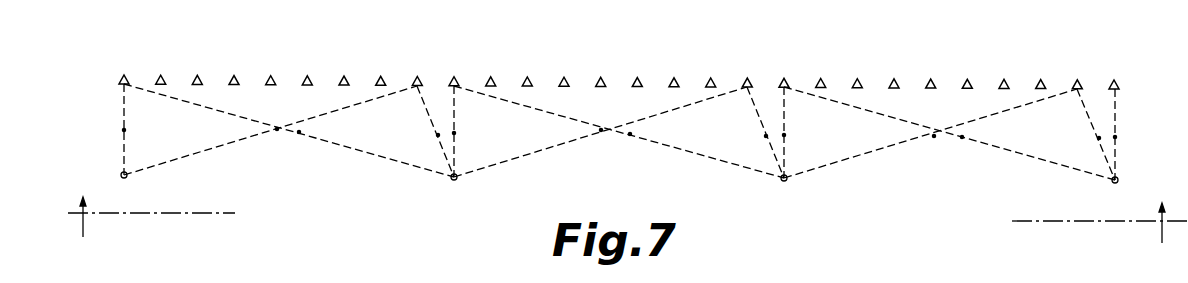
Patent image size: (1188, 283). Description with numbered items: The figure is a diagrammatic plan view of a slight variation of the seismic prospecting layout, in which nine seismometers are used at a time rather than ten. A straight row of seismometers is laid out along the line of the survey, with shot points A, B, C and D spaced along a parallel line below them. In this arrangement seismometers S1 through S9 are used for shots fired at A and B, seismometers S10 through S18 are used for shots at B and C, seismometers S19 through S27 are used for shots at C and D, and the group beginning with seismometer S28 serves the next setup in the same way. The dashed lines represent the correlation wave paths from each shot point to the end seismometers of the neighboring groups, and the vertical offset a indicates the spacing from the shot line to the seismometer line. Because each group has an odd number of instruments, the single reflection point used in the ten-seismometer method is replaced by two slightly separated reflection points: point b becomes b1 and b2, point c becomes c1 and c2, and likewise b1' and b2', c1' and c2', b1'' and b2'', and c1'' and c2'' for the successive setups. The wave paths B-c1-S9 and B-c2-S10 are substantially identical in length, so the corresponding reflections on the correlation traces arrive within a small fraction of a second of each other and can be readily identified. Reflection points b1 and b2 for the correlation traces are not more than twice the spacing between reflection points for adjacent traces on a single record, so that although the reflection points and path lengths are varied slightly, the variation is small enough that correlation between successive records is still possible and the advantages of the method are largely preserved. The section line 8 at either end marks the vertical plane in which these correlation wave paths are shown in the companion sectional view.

The seismometer S1 is at (124, 75).
The seismometer S9 is at (419, 76).
The seismometer S10 is at (456, 76).
The seismometer S18 is at (749, 78).
The seismometer S19 is at (786, 78).
The seismometer S27 is at (1080, 79).
The seismometer S28 is at (1117, 79).
The reflection point a is at (120, 130).
The reflection point b1 is at (264, 145).
The reflection point b2 is at (310, 147).
The reflection point c1 is at (424, 134).
The reflection point c2 is at (474, 131).
The reflection point b1' is at (591, 146).
The reflection point b2' is at (642, 148).
The reflection point c1' is at (750, 135).
The reflection point c2' is at (807, 132).
The reflection point b1'' is at (922, 151).
The reflection point b2'' is at (972, 151).
The reflection point c1'' is at (1078, 137).
The reflection point c2'' is at (1140, 134).
The shot point A is at (126, 178).
The shot point B is at (456, 180).
The shot point C is at (786, 181).
The shot point D is at (1117, 183).
The section line 8 is at (627, 236).